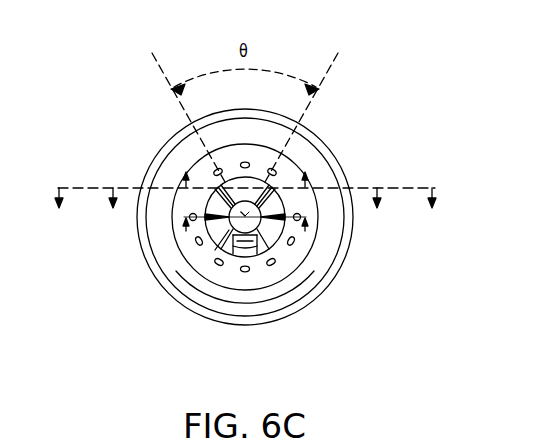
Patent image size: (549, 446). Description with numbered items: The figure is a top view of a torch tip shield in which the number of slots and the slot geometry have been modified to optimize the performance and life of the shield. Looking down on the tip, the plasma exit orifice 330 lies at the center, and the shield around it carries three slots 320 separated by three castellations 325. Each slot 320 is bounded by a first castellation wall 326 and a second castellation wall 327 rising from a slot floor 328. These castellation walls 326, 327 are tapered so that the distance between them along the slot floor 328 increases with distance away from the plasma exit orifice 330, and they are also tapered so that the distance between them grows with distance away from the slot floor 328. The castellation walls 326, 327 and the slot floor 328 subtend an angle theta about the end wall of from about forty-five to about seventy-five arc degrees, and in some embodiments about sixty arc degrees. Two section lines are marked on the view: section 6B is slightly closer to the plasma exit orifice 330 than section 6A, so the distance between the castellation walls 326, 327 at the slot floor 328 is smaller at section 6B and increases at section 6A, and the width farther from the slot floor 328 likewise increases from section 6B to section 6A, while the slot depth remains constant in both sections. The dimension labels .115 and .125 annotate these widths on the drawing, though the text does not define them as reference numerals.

The slot 320 is at (219, 234).
The castellation 325 is at (246, 257).
The first castellation wall 326 is at (206, 222).
The second castellation wall 327 is at (240, 252).
The slot floor 328 is at (222, 246).
The plasma exit orifice 330 is at (212, 203).
The dimension . 115 is at (244, 213).
The dimension . 125 is at (276, 200).
The section 6A is at (243, 217).
The section 6B is at (242, 209).